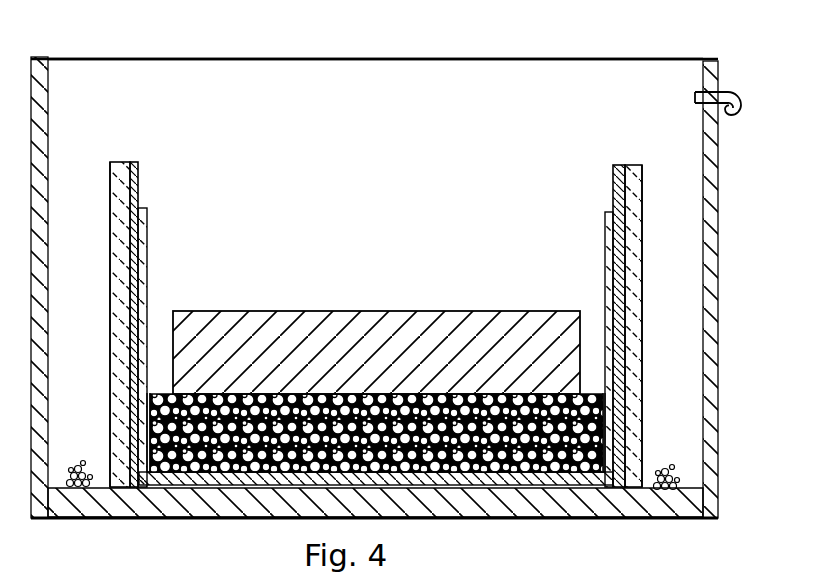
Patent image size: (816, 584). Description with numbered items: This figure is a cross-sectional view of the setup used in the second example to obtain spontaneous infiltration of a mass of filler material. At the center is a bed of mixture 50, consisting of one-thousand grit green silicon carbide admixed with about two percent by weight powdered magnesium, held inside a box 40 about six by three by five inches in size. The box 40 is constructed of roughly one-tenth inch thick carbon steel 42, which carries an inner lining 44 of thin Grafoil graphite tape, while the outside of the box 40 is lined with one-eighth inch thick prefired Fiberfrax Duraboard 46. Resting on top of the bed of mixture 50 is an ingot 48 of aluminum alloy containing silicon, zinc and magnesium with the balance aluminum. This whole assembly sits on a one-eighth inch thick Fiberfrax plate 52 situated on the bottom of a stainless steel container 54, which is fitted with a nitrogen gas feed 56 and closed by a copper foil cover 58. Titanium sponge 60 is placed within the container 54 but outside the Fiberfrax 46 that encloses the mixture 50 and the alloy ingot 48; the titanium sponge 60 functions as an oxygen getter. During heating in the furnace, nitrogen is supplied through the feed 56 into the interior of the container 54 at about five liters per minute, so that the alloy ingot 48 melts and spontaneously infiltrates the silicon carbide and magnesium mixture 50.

The box 40 is at (152, 184).
The carbon steel 42 is at (134, 162).
The inner lining 44 is at (147, 232).
The Fiberfrax Duraboard lining 46 is at (110, 231).
The ingot 48 is at (321, 284).
The mixture 50 is at (425, 451).
The plate 52 is at (641, 500).
The stainless steel container 54 is at (718, 312).
The nitrogen gas feed 56 is at (720, 100).
The copper foil cover 58 is at (612, 31).
The titanium sponge 60 is at (86, 462).